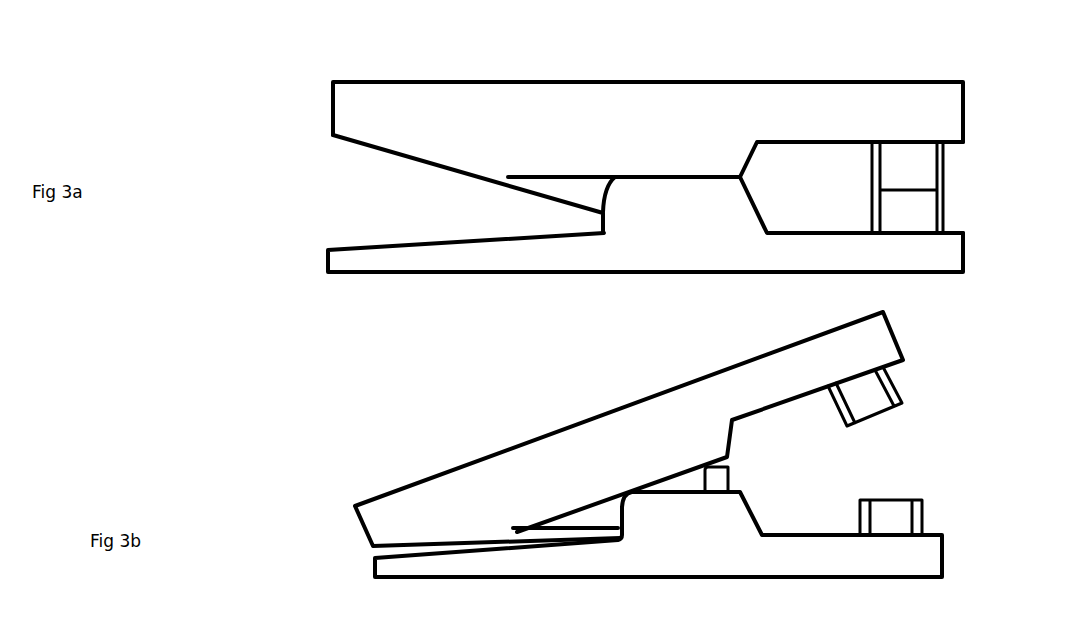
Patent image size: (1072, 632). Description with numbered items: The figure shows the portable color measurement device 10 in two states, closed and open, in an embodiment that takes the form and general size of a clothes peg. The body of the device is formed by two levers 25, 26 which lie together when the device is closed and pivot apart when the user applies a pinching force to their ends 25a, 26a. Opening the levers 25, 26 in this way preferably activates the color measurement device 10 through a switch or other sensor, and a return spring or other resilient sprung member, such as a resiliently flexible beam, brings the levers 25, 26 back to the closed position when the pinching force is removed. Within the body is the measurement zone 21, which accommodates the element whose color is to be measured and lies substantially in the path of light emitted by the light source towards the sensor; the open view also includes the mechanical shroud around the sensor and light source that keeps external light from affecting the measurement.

In FIG. 3A, the portable color measurement device 10 is at (530, 198).
In FIG. 3B, the portable color measurement device 10 is at (691, 444).
In FIG. 3B, the measurement zone 21 is at (882, 497).
In FIG. 3A, the lever 25 is at (665, 222).
In FIG. 3A, the end of lever 25a is at (345, 255).
In FIG. 3A, the lever 26 is at (493, 123).
In FIG. 3A, the end of lever 26a is at (355, 91).